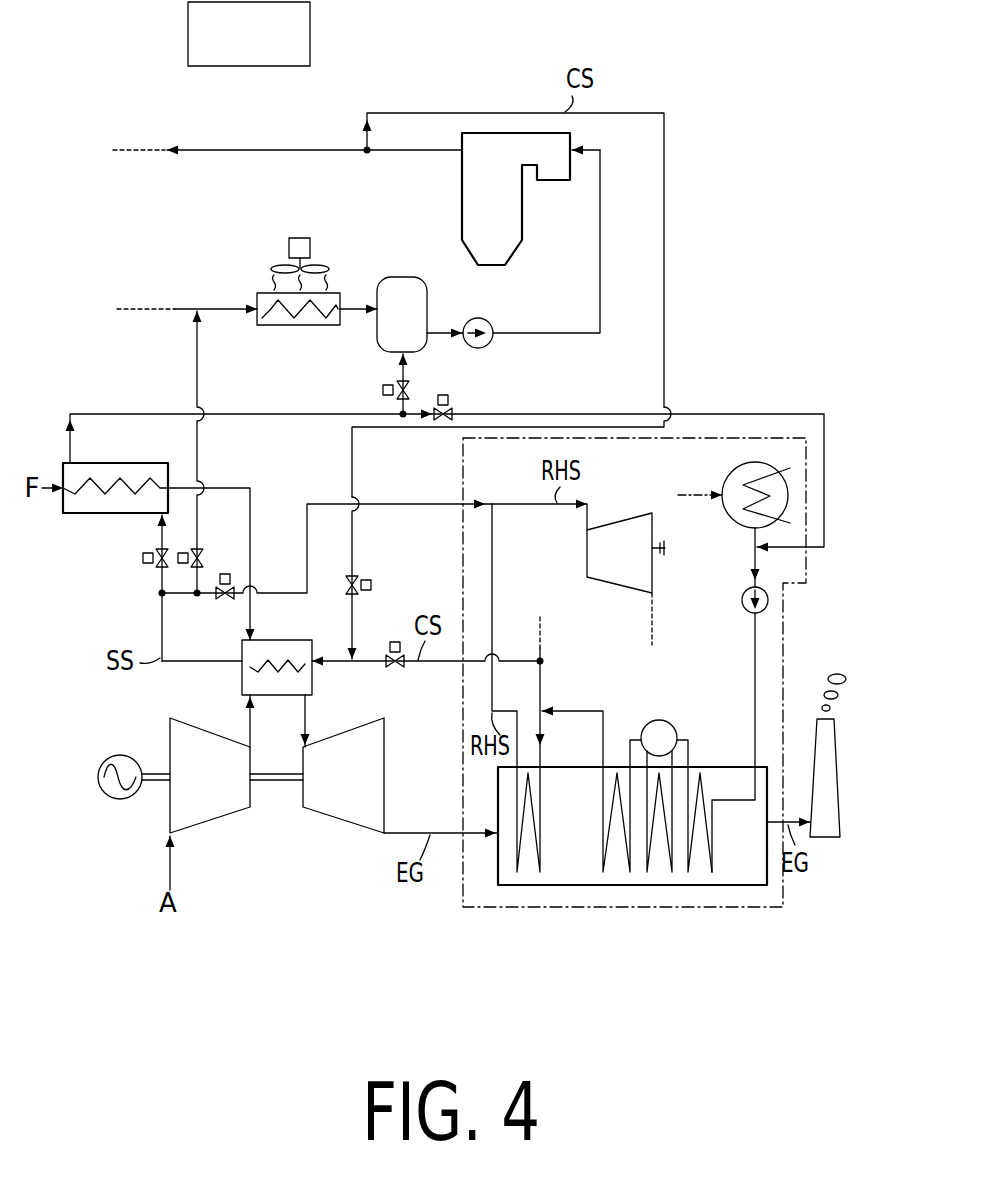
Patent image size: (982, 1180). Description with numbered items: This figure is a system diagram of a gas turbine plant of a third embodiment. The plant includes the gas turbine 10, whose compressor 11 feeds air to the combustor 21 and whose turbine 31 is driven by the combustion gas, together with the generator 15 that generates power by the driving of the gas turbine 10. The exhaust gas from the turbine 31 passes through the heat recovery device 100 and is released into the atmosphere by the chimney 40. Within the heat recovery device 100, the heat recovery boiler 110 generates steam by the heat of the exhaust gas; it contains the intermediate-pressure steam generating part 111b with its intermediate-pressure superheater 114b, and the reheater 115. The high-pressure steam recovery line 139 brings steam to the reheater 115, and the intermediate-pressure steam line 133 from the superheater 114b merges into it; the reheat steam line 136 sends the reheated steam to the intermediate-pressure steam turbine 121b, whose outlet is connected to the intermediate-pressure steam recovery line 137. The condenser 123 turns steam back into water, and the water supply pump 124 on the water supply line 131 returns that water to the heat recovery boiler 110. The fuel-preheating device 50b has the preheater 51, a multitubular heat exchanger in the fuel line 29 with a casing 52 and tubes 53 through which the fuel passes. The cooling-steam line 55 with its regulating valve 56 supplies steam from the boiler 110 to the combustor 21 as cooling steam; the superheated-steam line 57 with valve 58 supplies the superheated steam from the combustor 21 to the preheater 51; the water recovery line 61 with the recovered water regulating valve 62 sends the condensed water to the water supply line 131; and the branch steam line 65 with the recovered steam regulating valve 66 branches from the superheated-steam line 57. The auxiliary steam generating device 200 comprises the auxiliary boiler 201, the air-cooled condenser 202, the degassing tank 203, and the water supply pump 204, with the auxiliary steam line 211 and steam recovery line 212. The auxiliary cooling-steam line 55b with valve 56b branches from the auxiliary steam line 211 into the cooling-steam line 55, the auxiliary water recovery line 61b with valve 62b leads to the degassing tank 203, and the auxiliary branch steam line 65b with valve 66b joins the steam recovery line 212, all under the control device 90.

The gas turbine 10 is at (277, 803).
The compressor 11 is at (210, 834).
The generator 15 is at (115, 800).
The combustor 21 is at (242, 684).
The fuel line 29 is at (52, 482).
The turbine 31 is at (350, 834).
The chimney 40 is at (825, 840).
The fuel-preheating device 50b is at (85, 565).
The preheater 51 is at (76, 514).
The casing 52 is at (140, 462).
The tubes 53 is at (92, 478).
The cooling-steam line 55 is at (435, 668).
The auxiliary cooling-steam line 55b is at (440, 112).
The cooling-steam regulating valve 56 is at (398, 674).
The auxiliary cooling-steam regulating valve 56b is at (372, 587).
The superheated-steam line 57 is at (160, 605).
The superheated-steam regulating valve 58 is at (145, 562).
The water recovery line 61 is at (128, 413).
The auxiliary water recovery line 61b is at (398, 375).
The recovered water regulating valve 62 is at (446, 396).
The auxiliary recovered water regulating valve 62b is at (383, 391).
The branch steam line 65 is at (405, 503).
The auxiliary branch steam line 65b is at (199, 452).
The recovered steam regulating valve 66 is at (225, 603).
The auxiliary recovered steam regulating valve 66b is at (203, 552).
The control device 90 is at (310, 32).
The heat recovery device 100 is at (758, 920).
The heat recovery boiler 110 is at (620, 834).
The intermediate-pressure steam generating part 111b is at (665, 874).
The intermediate-pressure superheater 114b is at (603, 874).
The reheater 115 is at (533, 874).
The intermediate-pressure steam turbine 121b is at (615, 520).
The condenser 123 is at (726, 480).
The water supply pump 124 is at (768, 603).
The water supply line 131 is at (755, 660).
The intermediate-pressure steam line 133 is at (603, 710).
The reheat steam line 136 is at (505, 503).
The intermediate-pressure steam recovery line 137 is at (648, 612).
The high-pressure steam recovery line 139 is at (542, 646).
The auxiliary steam generating device 200 is at (688, 133).
The auxiliary boiler 201 is at (524, 222).
The condenser 202 is at (258, 292).
The degassing tank 203 is at (401, 276).
The water supply pump 204 is at (481, 317).
The auxiliary steam line 211 is at (285, 152).
The steam recovery line 212 is at (176, 310).